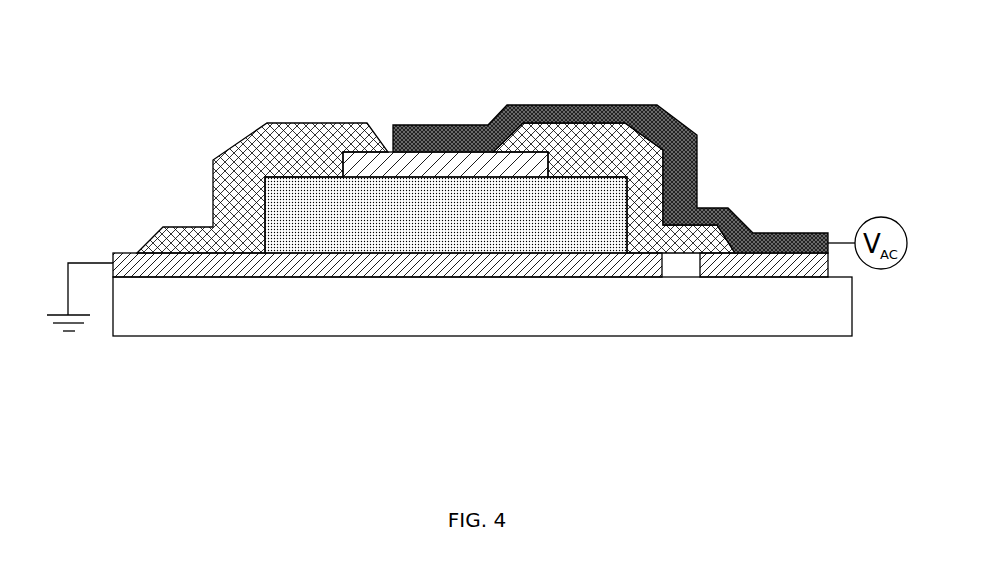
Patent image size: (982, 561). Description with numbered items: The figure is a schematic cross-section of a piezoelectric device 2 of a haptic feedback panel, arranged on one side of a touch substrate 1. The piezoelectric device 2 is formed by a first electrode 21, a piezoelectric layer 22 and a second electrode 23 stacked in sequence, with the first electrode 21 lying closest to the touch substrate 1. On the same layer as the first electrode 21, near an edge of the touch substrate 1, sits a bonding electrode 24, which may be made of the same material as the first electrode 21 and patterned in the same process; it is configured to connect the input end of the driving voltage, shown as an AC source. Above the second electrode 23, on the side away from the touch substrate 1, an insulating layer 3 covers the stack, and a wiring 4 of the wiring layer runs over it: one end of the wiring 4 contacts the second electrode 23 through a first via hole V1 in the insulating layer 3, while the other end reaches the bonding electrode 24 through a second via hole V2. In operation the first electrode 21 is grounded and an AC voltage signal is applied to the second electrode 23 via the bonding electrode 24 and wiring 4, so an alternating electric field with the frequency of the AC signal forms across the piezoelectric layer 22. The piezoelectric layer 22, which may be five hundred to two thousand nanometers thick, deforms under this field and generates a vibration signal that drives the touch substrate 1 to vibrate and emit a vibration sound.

The touch substrate 1 is at (182, 308).
The piezoelectric device 2 is at (303, 425).
The first electrode 21 is at (316, 265).
The piezoelectric layer 22 is at (415, 220).
The second electrode 23 is at (493, 168).
The bonding electrode 24 is at (783, 265).
The insulating layer 3 is at (292, 147).
The wiring 4 is at (455, 137).
The first via hole V1 is at (433, 150).
The second via hole V2 is at (758, 247).